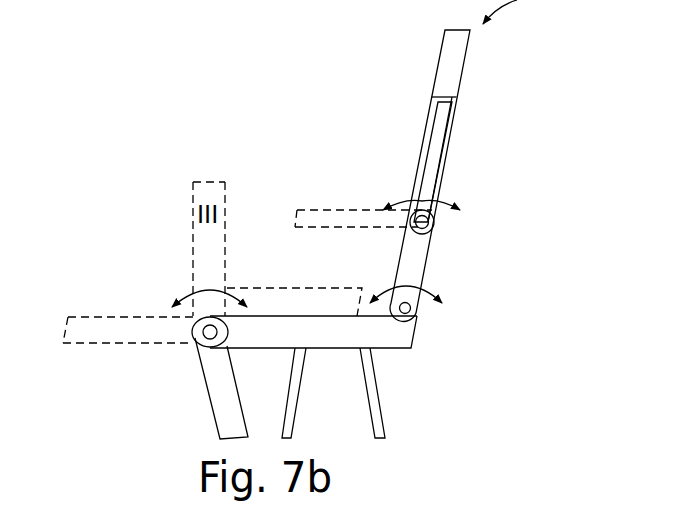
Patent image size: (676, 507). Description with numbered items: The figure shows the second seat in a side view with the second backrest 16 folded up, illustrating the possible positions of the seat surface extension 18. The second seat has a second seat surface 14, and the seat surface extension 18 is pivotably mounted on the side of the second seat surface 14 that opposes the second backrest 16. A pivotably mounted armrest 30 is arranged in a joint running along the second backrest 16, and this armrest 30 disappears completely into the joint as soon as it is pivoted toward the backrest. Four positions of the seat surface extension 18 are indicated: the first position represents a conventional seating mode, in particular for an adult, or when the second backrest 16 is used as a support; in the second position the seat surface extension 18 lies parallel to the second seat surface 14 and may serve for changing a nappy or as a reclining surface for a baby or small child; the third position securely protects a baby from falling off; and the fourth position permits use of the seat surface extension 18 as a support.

The second seat surface 14 is at (327, 312).
The second backrest 16 is at (450, 80).
The seat surface extension 18 is at (258, 303).
The armrest 30 is at (433, 147).